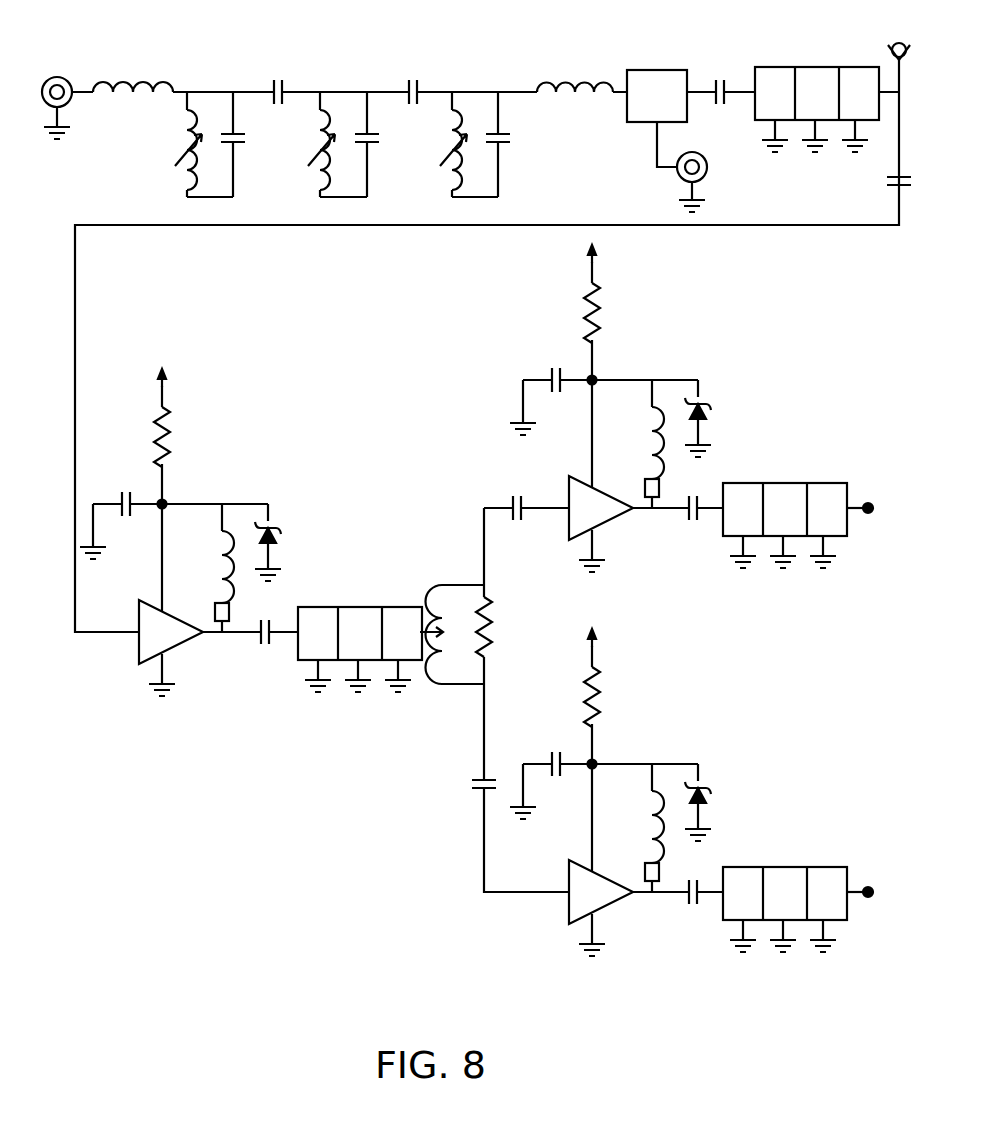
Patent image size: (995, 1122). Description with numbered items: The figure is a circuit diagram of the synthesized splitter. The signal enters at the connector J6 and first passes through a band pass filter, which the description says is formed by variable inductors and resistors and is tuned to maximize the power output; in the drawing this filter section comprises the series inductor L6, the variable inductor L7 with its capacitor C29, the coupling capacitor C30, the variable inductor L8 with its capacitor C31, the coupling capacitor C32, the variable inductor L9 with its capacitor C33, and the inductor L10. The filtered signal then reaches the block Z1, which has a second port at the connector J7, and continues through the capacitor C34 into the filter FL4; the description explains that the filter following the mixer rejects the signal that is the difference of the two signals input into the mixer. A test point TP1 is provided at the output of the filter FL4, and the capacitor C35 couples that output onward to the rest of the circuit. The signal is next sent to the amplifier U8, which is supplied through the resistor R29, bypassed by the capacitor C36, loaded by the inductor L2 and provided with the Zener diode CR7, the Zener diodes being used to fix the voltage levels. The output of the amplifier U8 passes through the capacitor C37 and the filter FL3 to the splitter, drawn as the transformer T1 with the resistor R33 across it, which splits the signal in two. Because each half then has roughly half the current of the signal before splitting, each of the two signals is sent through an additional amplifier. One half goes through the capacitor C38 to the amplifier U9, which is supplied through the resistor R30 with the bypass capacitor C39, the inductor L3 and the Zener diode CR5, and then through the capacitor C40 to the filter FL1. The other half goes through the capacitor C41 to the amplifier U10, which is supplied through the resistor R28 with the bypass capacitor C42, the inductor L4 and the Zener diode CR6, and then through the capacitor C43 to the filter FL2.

The input RF connector J6 is at (57, 93).
The series inductor L6 is at (133, 71).
The variable shunt inductor L7 is at (176, 144).
The shunt capacitor C29 is at (255, 144).
The series coupling capacitor C30 is at (281, 77).
The variable shunt inductor L8 is at (308, 144).
The shunt capacitor C31 is at (388, 144).
The series coupling capacitor C32 is at (417, 77).
The variable shunt inductor L9 is at (440, 144).
The shunt capacitor C33 is at (519, 144).
The series inductor L10 is at (575, 73).
The impedance network Z1 is at (657, 118).
The RF connector J7 is at (706, 182).
The coupling capacitor C34 is at (720, 77).
The bandpass filter FL4 is at (817, 94).
The test point TP1 is at (888, 36).
The coupling capacitor C35 is at (874, 184).
The supply resistor R29 is at (187, 436).
The bypass capacitor C36 is at (121, 511).
The choke inductor L2 is at (211, 568).
The diode CR7 is at (293, 542).
The amplifier U8 is at (171, 600).
The coupling capacitor C37 is at (267, 617).
The bandpass filter FL3 is at (360, 634).
The transformer T1 is at (451, 634).
The load resistor R33 is at (510, 627).
The supply resistor R30 is at (617, 312).
The bypass capacitor C39 is at (551, 387).
The choke inductor L3 is at (641, 444).
The diode CR5 is at (723, 418).
The coupling capacitor C38 is at (519, 493).
The amplifier U9 is at (601, 476).
The coupling capacitor C40 is at (678, 493).
The bandpass filter FL1 is at (798, 510).
The coupling capacitor C41 is at (455, 781).
The supply resistor R28 is at (617, 696).
The bypass capacitor C42 is at (551, 771).
The choke inductor L4 is at (641, 828).
The diode CR6 is at (723, 802).
The amplifier U10 is at (601, 860).
The coupling capacitor C43 is at (678, 877).
The bandpass filter FL2 is at (798, 894).